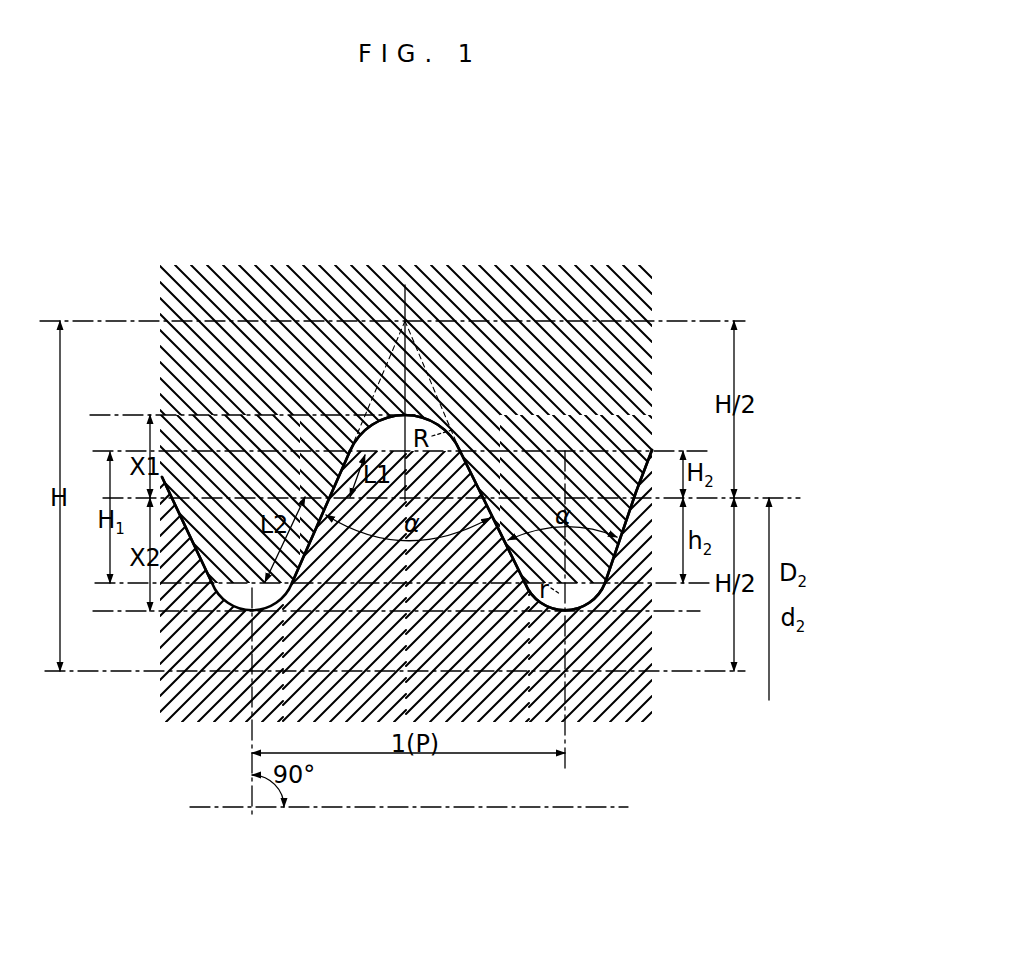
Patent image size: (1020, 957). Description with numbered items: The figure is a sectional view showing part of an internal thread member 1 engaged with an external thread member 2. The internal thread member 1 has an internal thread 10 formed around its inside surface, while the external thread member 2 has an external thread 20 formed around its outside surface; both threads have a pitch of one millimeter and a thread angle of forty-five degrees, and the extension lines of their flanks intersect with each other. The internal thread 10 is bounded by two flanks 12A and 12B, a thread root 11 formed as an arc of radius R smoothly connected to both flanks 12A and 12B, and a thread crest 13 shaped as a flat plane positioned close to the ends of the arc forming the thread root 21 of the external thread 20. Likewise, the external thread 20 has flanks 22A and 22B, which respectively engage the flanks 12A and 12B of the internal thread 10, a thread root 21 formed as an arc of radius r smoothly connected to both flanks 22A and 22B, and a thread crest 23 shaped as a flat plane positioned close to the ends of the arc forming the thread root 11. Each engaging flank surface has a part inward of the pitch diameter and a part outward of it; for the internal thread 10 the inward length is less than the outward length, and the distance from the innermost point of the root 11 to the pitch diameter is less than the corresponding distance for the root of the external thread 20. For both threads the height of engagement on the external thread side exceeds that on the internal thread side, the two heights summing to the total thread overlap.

The internal thread member 1 is at (440, 416).
The external thread member 2 is at (429, 627).
The internal thread 10 is at (590, 470).
The thread root of the internal thread 11 is at (420, 420).
The flank of the internal thread 12A is at (347, 470).
The flank of the internal thread 12B is at (197, 493).
The thread crest of the internal thread 13 is at (592, 600).
The external thread 20 is at (460, 570).
The thread root of the external thread 21 is at (232, 600).
The flank of the external thread 22A is at (304, 560).
The flank of the external thread 22B is at (195, 585).
The thread crest of the external thread 23 is at (393, 416).